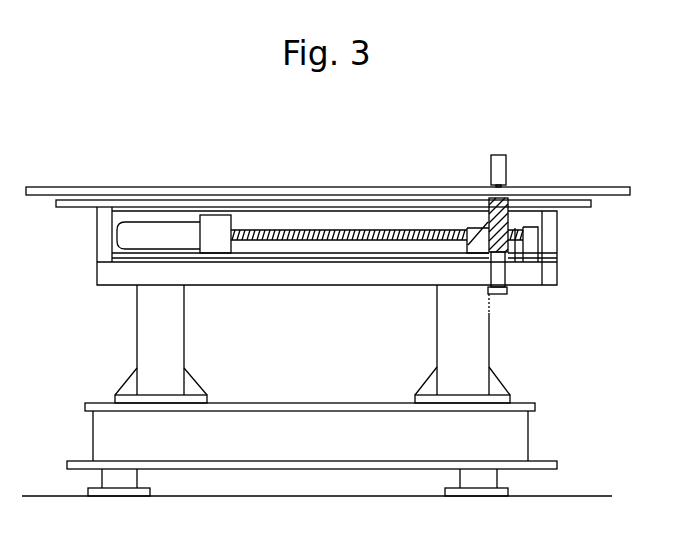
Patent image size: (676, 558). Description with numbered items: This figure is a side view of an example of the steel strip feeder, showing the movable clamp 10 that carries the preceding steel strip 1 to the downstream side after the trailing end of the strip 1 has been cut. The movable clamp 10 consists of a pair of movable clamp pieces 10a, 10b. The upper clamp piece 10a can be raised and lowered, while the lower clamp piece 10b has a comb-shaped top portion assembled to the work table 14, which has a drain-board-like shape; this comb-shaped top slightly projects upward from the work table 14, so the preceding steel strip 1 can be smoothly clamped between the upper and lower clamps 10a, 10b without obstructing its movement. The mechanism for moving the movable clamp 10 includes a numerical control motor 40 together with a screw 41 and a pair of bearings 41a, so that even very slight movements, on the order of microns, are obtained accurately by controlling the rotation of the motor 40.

The preceding steel strip 1 is at (288, 193).
The work table 14 is at (157, 203).
The numerical control motor 40 is at (124, 233).
The feed screw 41 is at (352, 230).
The bearings 41a is at (295, 263).
The movable clamp 10 is at (510, 224).
The upper clamp piece 10a is at (491, 173).
The lower clamp piece 10b is at (512, 218).